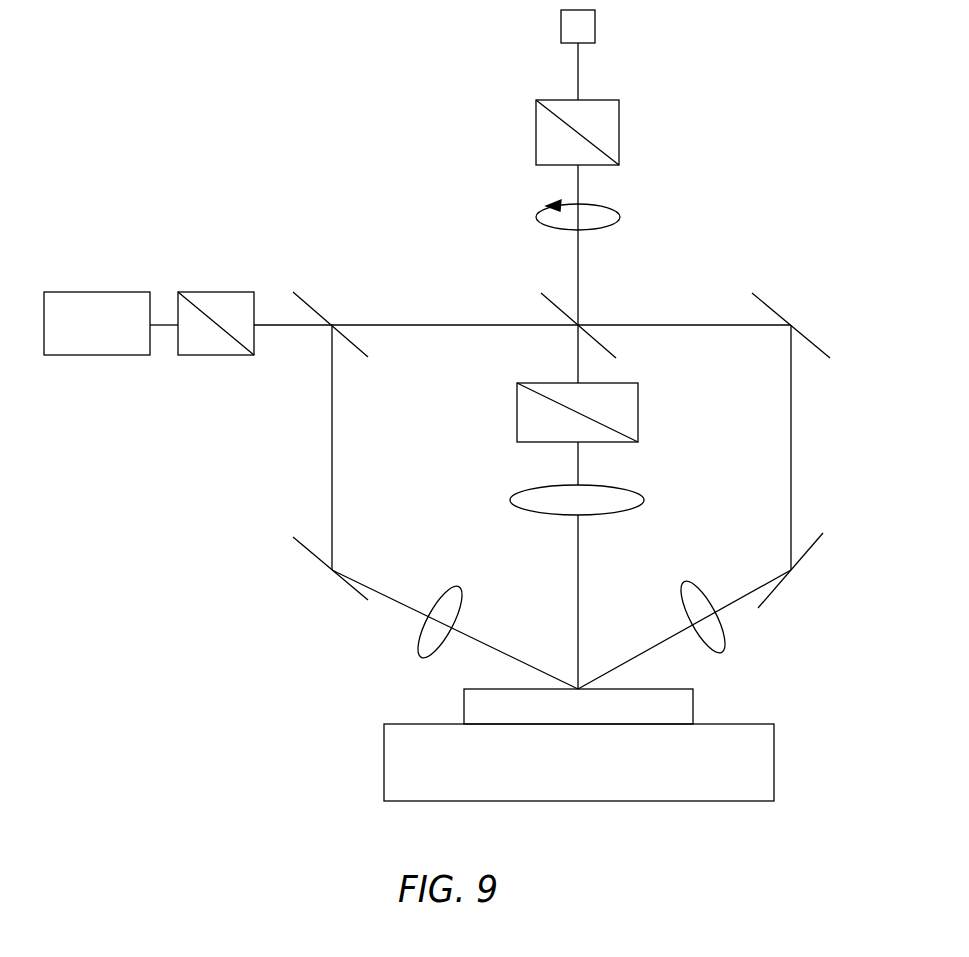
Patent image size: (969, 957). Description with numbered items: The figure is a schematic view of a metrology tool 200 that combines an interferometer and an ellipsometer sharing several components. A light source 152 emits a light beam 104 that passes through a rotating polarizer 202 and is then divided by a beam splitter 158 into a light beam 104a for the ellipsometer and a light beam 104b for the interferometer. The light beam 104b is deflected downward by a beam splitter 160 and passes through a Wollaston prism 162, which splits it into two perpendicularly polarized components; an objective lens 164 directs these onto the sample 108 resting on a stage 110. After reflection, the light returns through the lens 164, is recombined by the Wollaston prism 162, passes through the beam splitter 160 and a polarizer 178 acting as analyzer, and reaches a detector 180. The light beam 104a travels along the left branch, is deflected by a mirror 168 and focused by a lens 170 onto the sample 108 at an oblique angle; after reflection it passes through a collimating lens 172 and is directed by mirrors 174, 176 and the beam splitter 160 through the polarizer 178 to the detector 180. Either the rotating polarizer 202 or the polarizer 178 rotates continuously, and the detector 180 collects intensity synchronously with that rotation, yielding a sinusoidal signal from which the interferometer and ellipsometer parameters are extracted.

The metrology tool 200 is at (330, 114).
The light source 152 is at (125, 292).
The rotating polarizer 202 is at (236, 292).
The light beam 104 is at (285, 328).
The light beam 104a is at (332, 444).
The light beam 104b is at (423, 328).
The beam splitter 158 is at (305, 299).
The beam splitter 160 is at (555, 298).
The mirror 176 is at (765, 300).
The Wollaston prism 162 is at (640, 415).
The objective lens 164 is at (644, 500).
The mirror 168 is at (352, 590).
The lens 170 is at (462, 588).
The collimating lens 172 is at (683, 588).
The mirror 174 is at (812, 552).
The polarizer 178 is at (619, 133).
The detector 180 is at (595, 25).
The sample 108 is at (693, 705).
The stage 110 is at (774, 787).